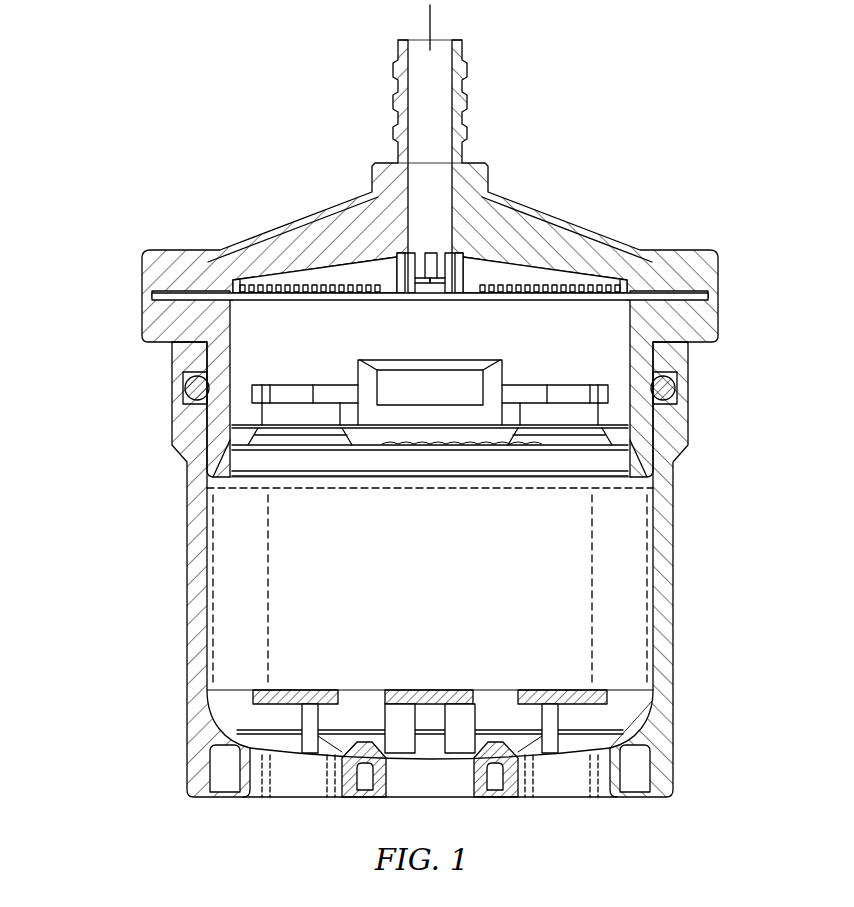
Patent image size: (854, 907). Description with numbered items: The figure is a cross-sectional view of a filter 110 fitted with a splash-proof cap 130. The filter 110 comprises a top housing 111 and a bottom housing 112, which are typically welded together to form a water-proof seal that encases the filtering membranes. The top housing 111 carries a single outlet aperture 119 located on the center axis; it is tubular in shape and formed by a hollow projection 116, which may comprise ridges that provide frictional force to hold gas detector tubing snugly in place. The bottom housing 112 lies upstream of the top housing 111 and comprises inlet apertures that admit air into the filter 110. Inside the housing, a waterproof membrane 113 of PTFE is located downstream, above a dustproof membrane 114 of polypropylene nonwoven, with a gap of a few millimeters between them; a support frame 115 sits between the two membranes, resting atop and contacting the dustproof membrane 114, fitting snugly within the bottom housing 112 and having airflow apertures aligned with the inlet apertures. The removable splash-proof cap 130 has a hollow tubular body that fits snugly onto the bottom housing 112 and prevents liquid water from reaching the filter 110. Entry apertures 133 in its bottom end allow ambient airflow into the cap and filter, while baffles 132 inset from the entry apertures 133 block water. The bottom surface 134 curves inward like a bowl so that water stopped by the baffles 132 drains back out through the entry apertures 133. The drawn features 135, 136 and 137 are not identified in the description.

The filter 110 is at (730, 41).
The top housing 111 is at (100, 38).
The bottom housing 112 is at (100, 299).
The waterproof membrane 113 is at (256, 272).
The dustproof membrane 114 is at (622, 447).
The support frame 115 is at (446, 384).
The hollow projection 116 is at (487, 42).
The outlet aperture 119 is at (421, 48).
The splash-proof cap 130 is at (139, 348).
The baffles 132 is at (305, 690).
The entry apertures 133 is at (342, 800).
The bottom surface 134 is at (594, 752).
The base portion 135 is at (680, 740).
The mounting hole 136 is at (380, 797).
The O-ring 137 is at (180, 385).